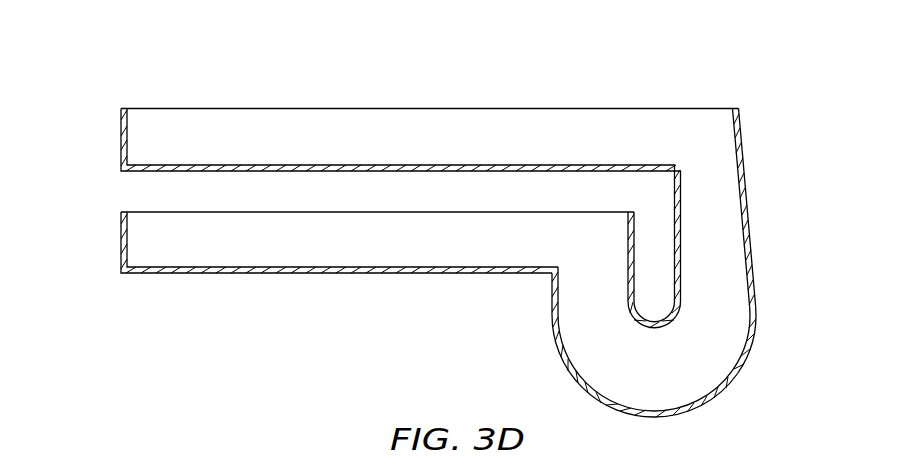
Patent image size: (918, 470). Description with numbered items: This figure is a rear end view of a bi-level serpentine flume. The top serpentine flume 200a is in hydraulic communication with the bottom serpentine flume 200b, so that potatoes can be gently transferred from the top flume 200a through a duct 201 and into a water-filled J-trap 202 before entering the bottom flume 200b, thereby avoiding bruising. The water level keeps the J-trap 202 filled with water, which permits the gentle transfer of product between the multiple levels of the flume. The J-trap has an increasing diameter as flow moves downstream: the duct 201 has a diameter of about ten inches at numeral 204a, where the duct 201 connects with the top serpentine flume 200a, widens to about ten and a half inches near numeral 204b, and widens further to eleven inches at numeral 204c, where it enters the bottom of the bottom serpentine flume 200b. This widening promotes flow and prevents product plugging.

The top serpentine flume 200a is at (121, 143).
The bottom serpentine flume 200b is at (121, 235).
The duct 201 is at (747, 199).
The J-trap 202 is at (730, 384).
The ten-inch diameter location of the duct 204a is at (713, 194).
The ten-and-a-half-inch diameter location of the duct 204b is at (727, 345).
The eleven-inch diameter location of the duct 204c is at (557, 336).